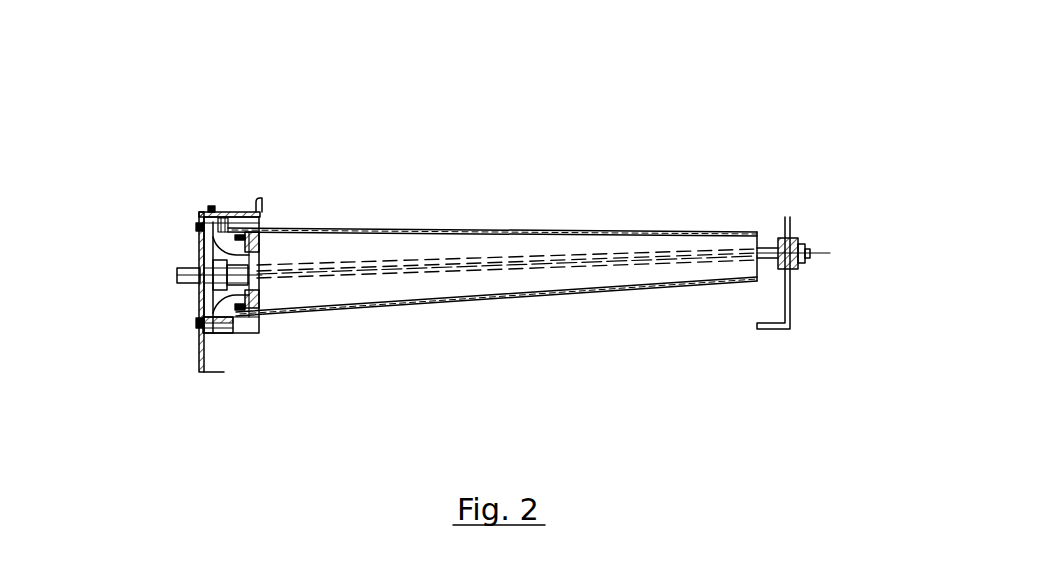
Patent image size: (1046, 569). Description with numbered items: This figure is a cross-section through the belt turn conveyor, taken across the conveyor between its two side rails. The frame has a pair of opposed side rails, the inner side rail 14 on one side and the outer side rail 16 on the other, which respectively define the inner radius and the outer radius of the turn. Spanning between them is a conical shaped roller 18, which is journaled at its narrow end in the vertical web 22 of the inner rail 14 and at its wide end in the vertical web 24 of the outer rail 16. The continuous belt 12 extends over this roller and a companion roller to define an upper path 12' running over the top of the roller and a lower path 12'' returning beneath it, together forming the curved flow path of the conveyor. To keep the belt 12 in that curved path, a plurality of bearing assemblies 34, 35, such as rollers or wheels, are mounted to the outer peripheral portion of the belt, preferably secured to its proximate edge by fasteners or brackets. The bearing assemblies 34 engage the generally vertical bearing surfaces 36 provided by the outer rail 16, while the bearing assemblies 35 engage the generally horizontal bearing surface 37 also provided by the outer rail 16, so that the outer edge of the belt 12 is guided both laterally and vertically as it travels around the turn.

The belt 12 is at (507, 184).
The upper path 12' is at (534, 159).
The lower path 12'' is at (614, 375).
The inner side rail 14 is at (800, 324).
The outer side rail 16 is at (187, 383).
The conical shaped roller 18 is at (461, 222).
The vertical web 22 is at (792, 300).
The vertical web 24 is at (200, 350).
The bearing assembly 34 is at (202, 317).
The bearing assembly 35 is at (305, 272).
The vertical bearing surface 36 is at (254, 318).
The horizontal bearing surface 37 is at (223, 333).